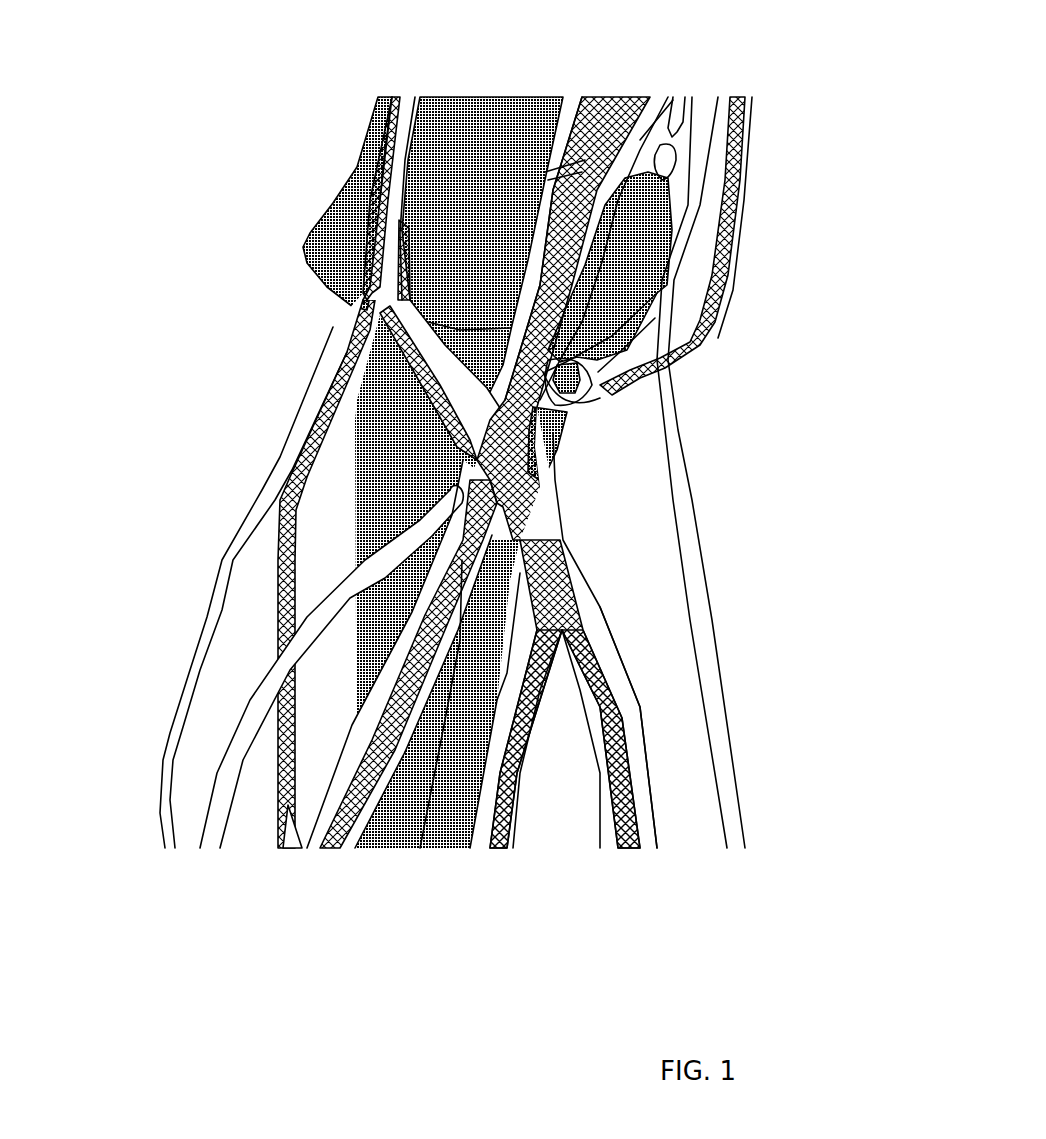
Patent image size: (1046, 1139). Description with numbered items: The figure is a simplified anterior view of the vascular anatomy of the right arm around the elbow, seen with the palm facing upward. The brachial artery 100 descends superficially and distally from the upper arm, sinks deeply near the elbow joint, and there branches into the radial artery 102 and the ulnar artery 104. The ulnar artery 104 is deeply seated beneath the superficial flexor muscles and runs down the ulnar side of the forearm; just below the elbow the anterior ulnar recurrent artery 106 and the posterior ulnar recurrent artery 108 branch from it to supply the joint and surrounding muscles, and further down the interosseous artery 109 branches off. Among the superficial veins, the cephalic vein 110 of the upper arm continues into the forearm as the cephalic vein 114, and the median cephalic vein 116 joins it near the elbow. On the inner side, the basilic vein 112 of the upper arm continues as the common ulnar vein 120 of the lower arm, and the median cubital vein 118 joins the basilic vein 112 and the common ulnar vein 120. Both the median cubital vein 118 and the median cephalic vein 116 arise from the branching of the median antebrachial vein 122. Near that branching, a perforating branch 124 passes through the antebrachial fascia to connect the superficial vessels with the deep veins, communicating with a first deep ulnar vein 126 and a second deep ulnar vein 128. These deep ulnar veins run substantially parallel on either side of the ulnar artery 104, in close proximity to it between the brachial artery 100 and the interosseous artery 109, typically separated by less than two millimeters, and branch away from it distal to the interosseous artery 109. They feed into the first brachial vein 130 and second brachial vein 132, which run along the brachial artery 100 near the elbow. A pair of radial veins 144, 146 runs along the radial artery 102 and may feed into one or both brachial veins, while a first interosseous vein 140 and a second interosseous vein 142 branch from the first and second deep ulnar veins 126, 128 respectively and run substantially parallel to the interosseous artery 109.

The brachial artery 100 is at (612, 172).
The radial artery 102 is at (326, 843).
The ulnar artery 104 is at (545, 572).
The anterior ulnar recurrent artery 106 is at (623, 390).
The posterior ulnar recurrent artery 108 is at (727, 273).
The interosseous artery 109 is at (498, 843).
The cephalic vein 110 is at (403, 148).
The basilic vein 112 is at (690, 198).
The cephalic vein 114 is at (280, 460).
The median cephalic vein 116 is at (430, 370).
The median cubital vein 118 is at (600, 333).
The common ulnar vein 120 is at (690, 522).
The median antebrachial vein 122 is at (277, 658).
The perforating branch 124 is at (473, 437).
The first deep ulnar vein 126 is at (608, 843).
The second deep ulnar vein 128 is at (650, 843).
The first brachial vein 130 is at (605, 107).
The second brachial vein 132 is at (665, 105).
The first interosseous vein 140 is at (475, 843).
The second interosseous vein 142 is at (513, 843).
The radial vein 144 is at (322, 842).
The radial vein 146 is at (350, 843).